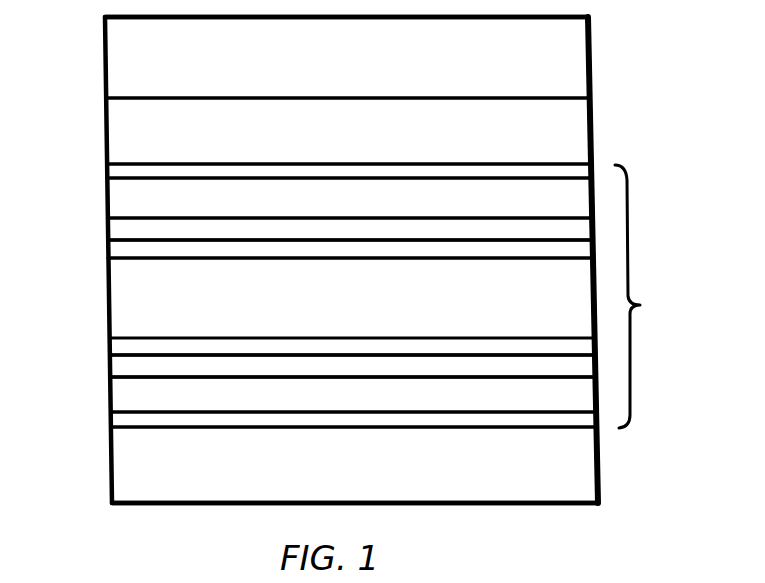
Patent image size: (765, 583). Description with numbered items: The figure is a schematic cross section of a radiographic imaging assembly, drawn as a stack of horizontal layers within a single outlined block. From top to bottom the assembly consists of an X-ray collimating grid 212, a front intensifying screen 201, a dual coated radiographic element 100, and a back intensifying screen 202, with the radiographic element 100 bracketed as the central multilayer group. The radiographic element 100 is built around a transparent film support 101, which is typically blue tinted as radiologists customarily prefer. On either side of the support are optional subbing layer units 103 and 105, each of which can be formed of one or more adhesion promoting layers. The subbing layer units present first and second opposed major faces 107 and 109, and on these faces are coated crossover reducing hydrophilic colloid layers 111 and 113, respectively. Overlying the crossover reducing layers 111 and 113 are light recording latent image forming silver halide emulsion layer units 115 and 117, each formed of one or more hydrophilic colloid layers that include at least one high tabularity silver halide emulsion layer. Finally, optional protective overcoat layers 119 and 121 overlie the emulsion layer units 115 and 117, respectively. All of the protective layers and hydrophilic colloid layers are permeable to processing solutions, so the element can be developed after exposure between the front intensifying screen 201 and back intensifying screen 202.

The dual coated radiographic element 100 is at (644, 296).
The transparent film support 101 is at (106, 306).
The subbing layer unit 103 is at (365, 250).
The subbing layer unit 105 is at (282, 347).
The first major face 107 is at (118, 242).
The second major face 109 is at (118, 367).
The crossover reducing hydrophilic colloid layer 111 is at (200, 232).
The crossover reducing hydrophilic colloid layer 113 is at (463, 363).
The silver halide emulsion layer unit 115 is at (107, 203).
The silver halide emulsion layer unit 117 is at (107, 398).
The protective overcoat layer 119 is at (537, 172).
The protective overcoat layer 121 is at (415, 422).
The front intensifying screen 201 is at (592, 125).
The back intensifying screen 202 is at (598, 476).
The X-ray collimating grid 212 is at (577, 80).